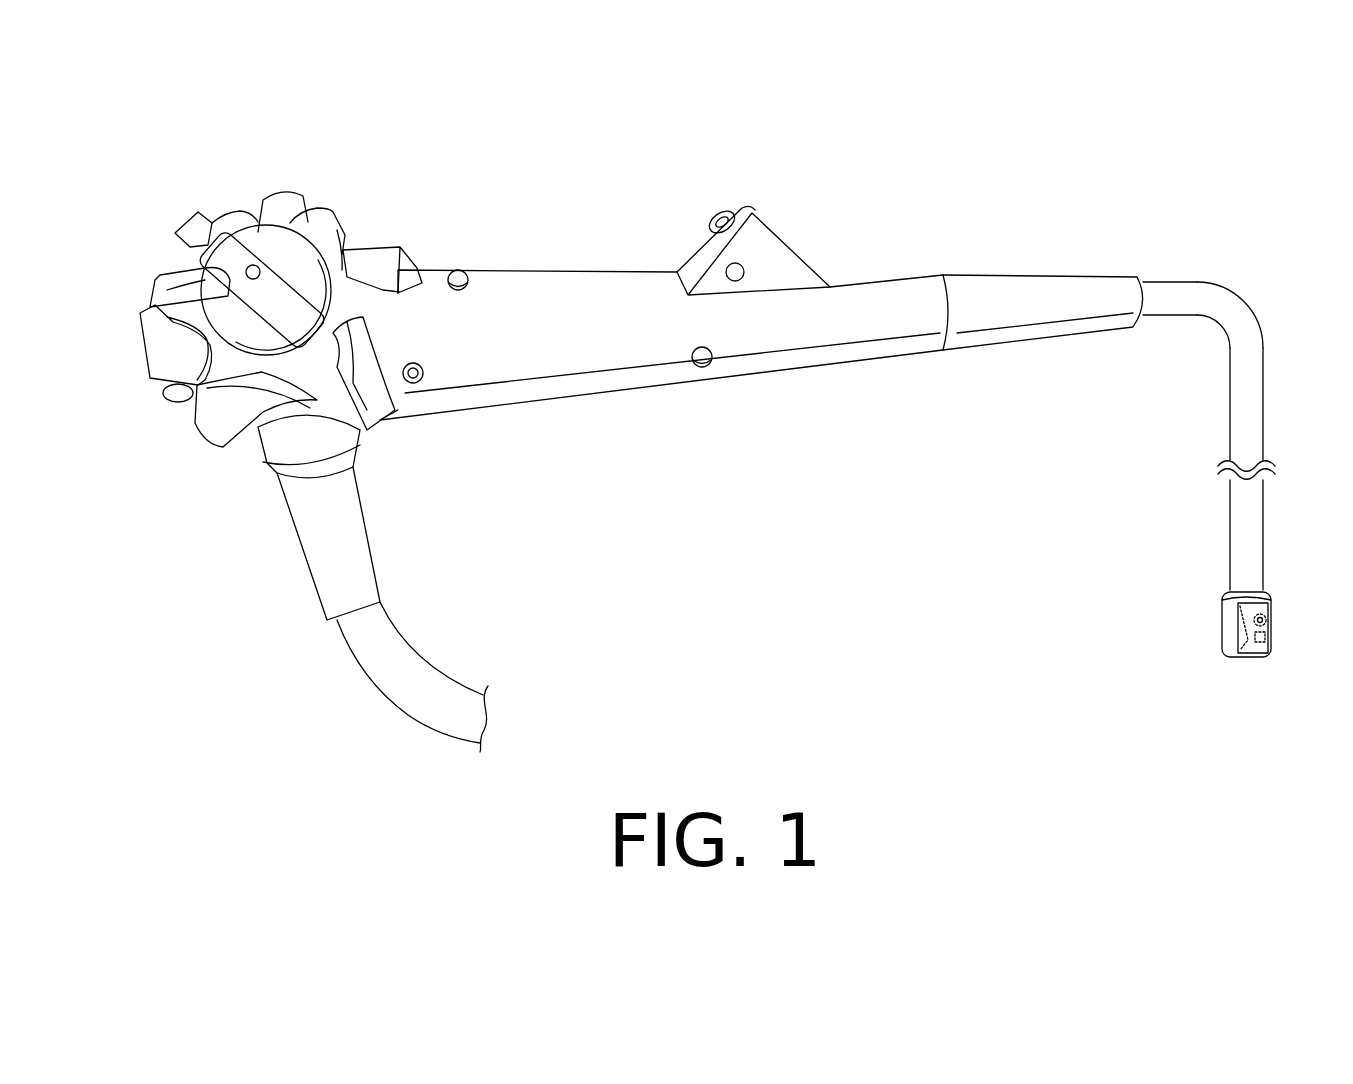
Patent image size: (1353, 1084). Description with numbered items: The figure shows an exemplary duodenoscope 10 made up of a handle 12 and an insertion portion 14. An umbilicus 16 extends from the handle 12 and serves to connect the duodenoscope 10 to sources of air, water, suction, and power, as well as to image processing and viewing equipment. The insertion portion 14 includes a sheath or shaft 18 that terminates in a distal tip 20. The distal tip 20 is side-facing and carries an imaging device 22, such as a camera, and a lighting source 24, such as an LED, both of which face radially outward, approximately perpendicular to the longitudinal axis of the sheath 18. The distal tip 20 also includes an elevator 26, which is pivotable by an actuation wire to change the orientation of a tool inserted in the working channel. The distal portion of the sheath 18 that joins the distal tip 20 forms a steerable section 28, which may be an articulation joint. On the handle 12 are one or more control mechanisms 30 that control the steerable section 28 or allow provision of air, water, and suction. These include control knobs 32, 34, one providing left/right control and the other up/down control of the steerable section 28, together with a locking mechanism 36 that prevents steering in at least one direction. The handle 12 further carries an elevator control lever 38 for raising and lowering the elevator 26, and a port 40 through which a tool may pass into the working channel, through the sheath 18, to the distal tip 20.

The duodenoscope 10 is at (556, 213).
The handle 12 is at (641, 420).
The insertion portion 14 is at (1280, 427).
The umbilicus 16 is at (408, 715).
The sheath 18 is at (1205, 283).
The distal tip 20 is at (1222, 628).
The imaging device 22 is at (1262, 622).
The lighting source 24 is at (1262, 641).
The elevator 26 is at (1242, 656).
The steerable section 28 is at (1228, 530).
The control mechanisms 30 is at (128, 216).
The control knob 32 is at (333, 210).
The control knob 34 is at (279, 190).
The locking mechanism 36 is at (220, 248).
The elevator control lever 38 is at (178, 222).
The port 40 is at (720, 212).